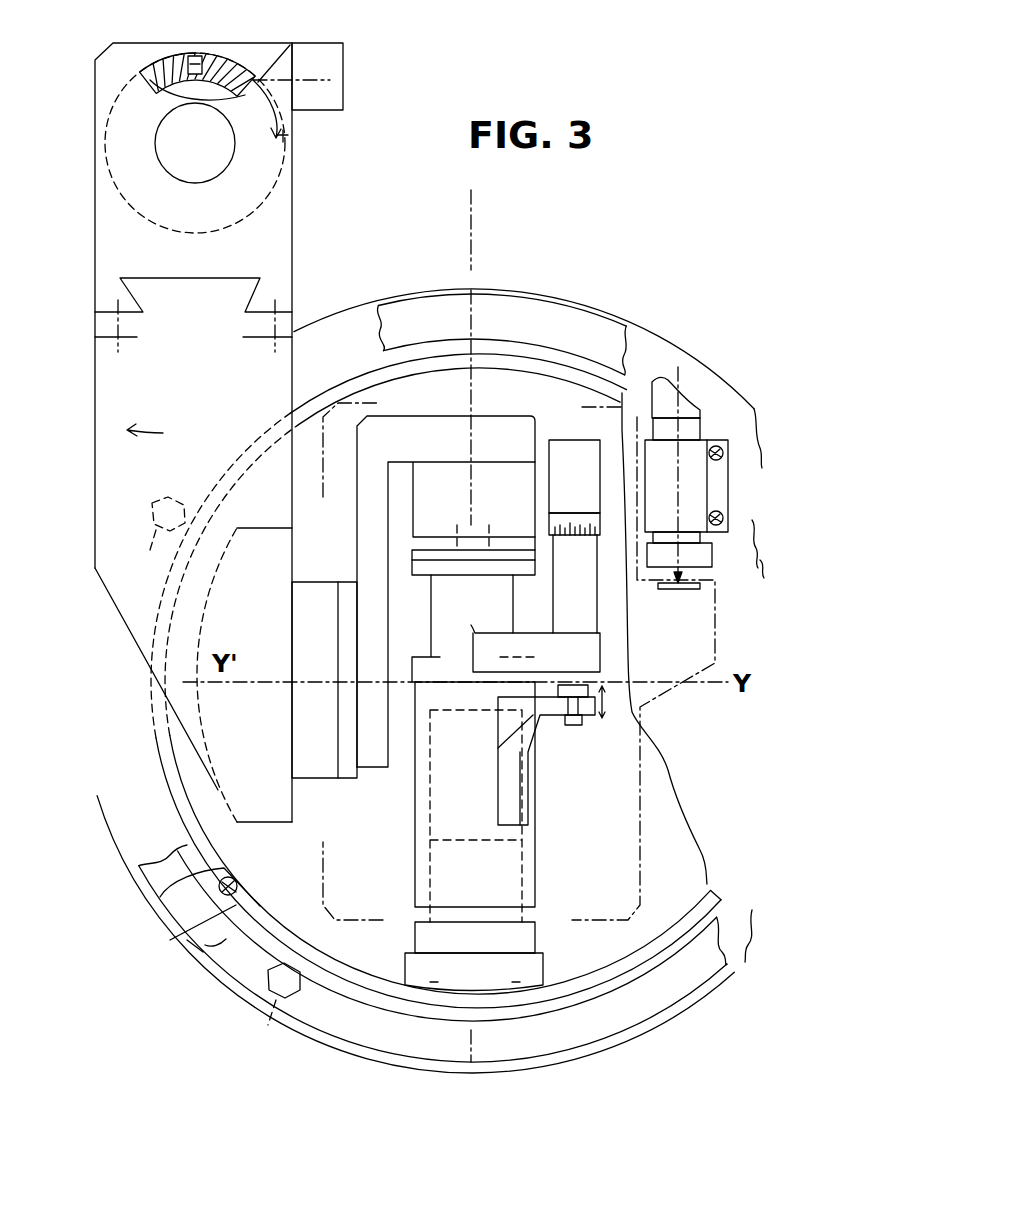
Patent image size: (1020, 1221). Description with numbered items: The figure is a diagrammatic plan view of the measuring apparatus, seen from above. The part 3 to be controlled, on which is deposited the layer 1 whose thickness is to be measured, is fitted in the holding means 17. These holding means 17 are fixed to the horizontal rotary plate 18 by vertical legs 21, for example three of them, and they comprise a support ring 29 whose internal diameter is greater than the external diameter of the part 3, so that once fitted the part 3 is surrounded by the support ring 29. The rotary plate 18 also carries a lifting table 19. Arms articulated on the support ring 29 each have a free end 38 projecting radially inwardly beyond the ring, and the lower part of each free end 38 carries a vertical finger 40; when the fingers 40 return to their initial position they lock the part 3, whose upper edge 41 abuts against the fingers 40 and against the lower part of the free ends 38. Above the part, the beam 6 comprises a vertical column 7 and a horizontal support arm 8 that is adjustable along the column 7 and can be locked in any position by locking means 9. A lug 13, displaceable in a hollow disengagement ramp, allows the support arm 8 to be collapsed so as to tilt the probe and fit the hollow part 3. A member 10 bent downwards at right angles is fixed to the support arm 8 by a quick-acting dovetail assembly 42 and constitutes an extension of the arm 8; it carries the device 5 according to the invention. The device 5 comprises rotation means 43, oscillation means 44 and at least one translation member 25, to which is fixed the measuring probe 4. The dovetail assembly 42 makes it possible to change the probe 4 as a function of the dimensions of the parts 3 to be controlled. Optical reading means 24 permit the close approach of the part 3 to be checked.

The layer 1 is at (372, 372).
The part 3 is at (328, 380).
The probe 4 is at (546, 908).
The device 5 is at (403, 782).
The beam 6 is at (222, 22).
The vertical column 7 is at (211, 156).
The horizontal support arm 8 is at (290, 227).
The locking means 9 is at (343, 97).
The bent member 10 is at (132, 638).
The lug 13 is at (196, 56).
The holding means 17 is at (144, 916).
The rotary plate 18 is at (628, 1032).
The lifting table 19 is at (640, 883).
The vertical legs 21 is at (209, 777).
The optical reading means 24 is at (707, 387).
The translation member 25 is at (588, 598).
The support ring 29 is at (498, 306).
The free end 38 is at (230, 886).
The vertical finger 40 is at (462, 729).
The upper edge 41 is at (206, 963).
The quick-acting dovetail assembly 42 is at (148, 292).
The rotation means 43 is at (312, 575).
The oscillation means 44 is at (514, 507).